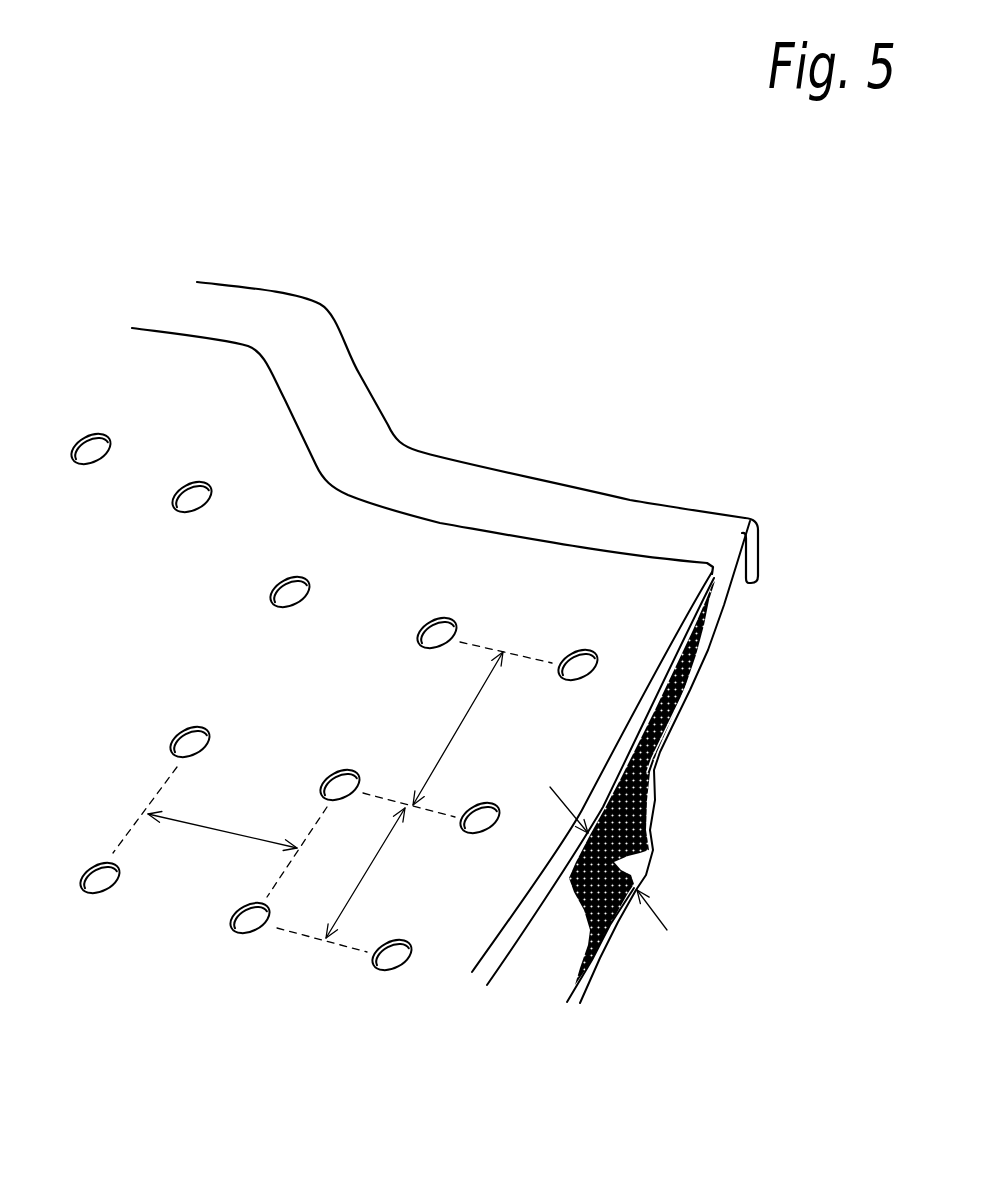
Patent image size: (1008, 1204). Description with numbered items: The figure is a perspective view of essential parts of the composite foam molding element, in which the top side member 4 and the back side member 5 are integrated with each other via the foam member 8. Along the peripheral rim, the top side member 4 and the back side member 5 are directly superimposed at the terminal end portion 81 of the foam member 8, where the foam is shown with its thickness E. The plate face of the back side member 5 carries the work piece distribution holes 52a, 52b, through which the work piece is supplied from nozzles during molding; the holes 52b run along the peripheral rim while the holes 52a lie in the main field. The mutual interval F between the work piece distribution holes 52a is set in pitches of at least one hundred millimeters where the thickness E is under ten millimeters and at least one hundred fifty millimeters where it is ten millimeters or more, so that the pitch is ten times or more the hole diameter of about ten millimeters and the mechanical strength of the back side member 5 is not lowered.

The top side member 4 is at (682, 533).
The back side member 5 is at (620, 587).
The foam material 8 is at (655, 771).
The terminal end portion 81 is at (729, 604).
The work piece distribution hole 52a is at (325, 768).
The work piece distribution hole 52b is at (418, 642).
The thickness of the foam member E is at (617, 865).
The mutual interval F is at (332, 797).